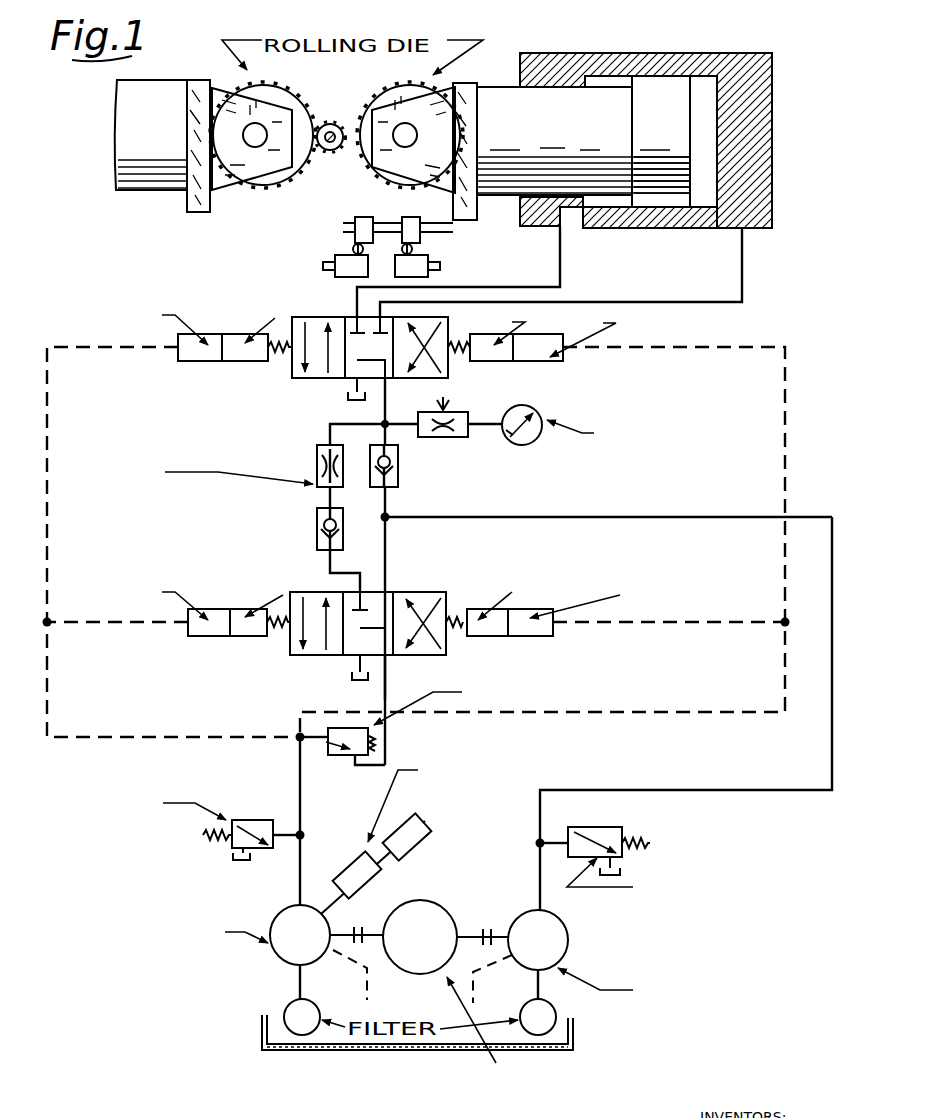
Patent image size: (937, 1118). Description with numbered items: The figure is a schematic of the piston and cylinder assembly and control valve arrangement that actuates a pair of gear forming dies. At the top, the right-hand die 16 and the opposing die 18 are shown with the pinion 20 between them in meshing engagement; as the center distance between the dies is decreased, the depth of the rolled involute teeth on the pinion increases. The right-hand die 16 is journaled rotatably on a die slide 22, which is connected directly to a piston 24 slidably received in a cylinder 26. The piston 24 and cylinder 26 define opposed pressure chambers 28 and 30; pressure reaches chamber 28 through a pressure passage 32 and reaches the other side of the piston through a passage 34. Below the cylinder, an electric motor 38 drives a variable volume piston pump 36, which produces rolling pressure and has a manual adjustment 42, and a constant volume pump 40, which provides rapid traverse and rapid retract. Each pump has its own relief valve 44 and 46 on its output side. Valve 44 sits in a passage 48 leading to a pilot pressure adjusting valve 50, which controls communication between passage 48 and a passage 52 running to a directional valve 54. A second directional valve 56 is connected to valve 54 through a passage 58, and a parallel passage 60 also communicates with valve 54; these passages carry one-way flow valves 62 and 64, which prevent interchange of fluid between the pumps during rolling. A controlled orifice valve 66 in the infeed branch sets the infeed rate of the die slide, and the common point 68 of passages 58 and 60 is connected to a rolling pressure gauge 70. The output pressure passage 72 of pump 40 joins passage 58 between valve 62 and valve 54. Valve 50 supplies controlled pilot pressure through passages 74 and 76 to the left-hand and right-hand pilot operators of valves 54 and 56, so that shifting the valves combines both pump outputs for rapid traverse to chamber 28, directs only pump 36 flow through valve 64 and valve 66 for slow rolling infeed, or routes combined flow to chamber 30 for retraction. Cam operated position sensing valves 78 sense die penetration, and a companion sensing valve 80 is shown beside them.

The right-hand die 16 is at (362, 90).
The die 18 is at (253, 200).
The pinion 20 is at (330, 153).
The die slide 22 is at (504, 183).
The piston 24 is at (653, 196).
The cylinder 26 is at (675, 217).
The pressure chamber 28 is at (701, 203).
The pressure chamber 30 is at (598, 205).
The pressure passage 32 is at (710, 273).
The passage 34 is at (516, 287).
The piston pump of variable volume 36 is at (286, 906).
The electric motor 38 is at (457, 901).
The pump of constant volume 40 is at (530, 906).
The manual adjustment 42 is at (363, 855).
The pressure relief valve 44 is at (258, 820).
The pressure relief valve 46 is at (612, 819).
The passage 48 is at (305, 796).
The pilot pressure adjusting valve 50 is at (328, 736).
The passage 52 is at (388, 676).
The directional valve 54 is at (396, 589).
The directional valve 56 is at (335, 382).
The passage 58 is at (390, 504).
The passage 60 is at (350, 575).
The one-way flow valve 62 is at (400, 463).
The one-way flow valve 64 is at (318, 528).
The controlled orifice valve 66 is at (318, 461).
The common point 68 is at (388, 422).
The rolling pressure gauge 70 is at (535, 412).
The output pressure passage 72 is at (786, 777).
The pilot pressure passage 74 is at (48, 664).
The pilot pressure passage 76 is at (782, 667).
The position sensing valves 78 is at (340, 258).
The limit switch 80 is at (425, 262).